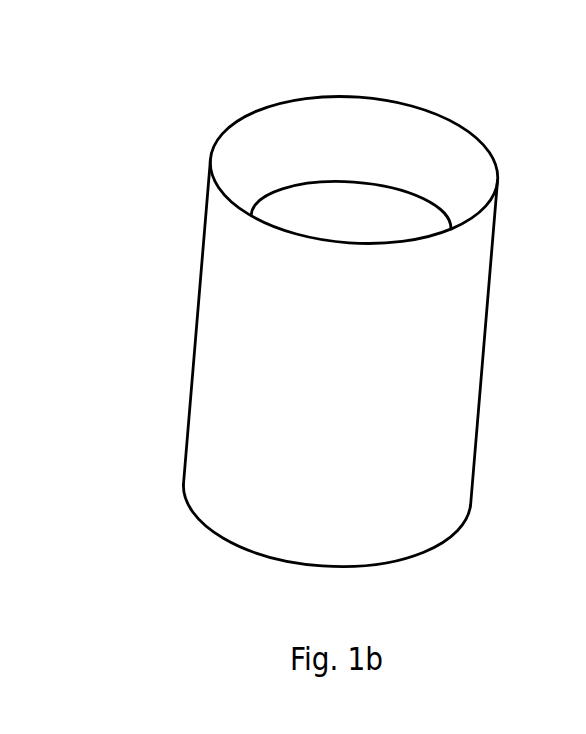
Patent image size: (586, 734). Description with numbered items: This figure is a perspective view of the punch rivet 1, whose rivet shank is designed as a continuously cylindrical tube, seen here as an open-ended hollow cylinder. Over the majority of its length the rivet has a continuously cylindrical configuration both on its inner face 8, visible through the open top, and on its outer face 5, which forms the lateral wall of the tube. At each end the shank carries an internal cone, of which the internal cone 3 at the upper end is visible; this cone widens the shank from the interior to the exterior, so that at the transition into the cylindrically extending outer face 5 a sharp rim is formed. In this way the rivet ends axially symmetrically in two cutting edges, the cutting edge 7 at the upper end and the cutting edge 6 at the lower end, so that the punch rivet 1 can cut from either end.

The punch rivet 1 is at (290, 326).
The internal cone 3 is at (362, 130).
The outer face 5 is at (366, 403).
The cutting edge 6 is at (243, 552).
The cutting edge 7 is at (267, 110).
The inner face 8 is at (362, 215).